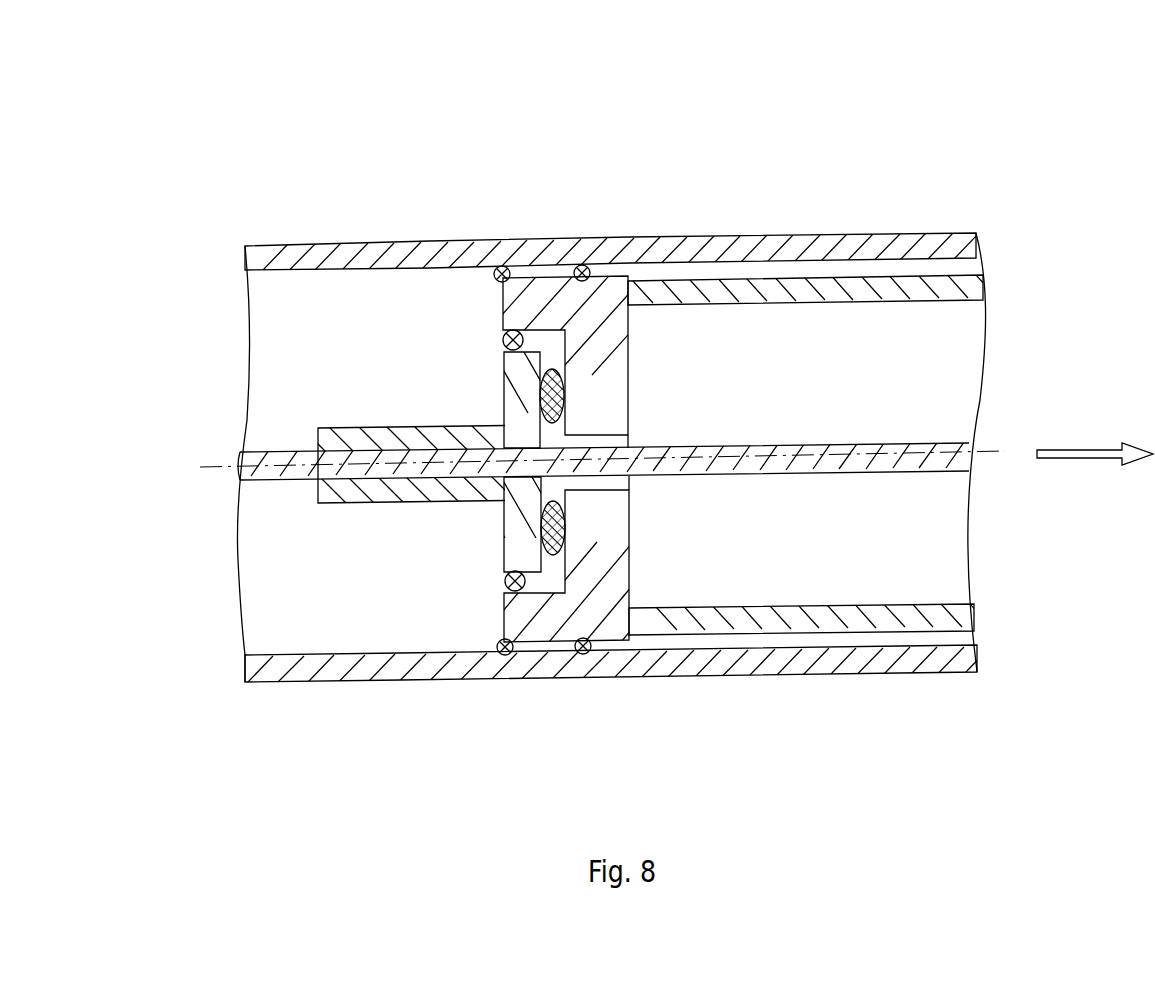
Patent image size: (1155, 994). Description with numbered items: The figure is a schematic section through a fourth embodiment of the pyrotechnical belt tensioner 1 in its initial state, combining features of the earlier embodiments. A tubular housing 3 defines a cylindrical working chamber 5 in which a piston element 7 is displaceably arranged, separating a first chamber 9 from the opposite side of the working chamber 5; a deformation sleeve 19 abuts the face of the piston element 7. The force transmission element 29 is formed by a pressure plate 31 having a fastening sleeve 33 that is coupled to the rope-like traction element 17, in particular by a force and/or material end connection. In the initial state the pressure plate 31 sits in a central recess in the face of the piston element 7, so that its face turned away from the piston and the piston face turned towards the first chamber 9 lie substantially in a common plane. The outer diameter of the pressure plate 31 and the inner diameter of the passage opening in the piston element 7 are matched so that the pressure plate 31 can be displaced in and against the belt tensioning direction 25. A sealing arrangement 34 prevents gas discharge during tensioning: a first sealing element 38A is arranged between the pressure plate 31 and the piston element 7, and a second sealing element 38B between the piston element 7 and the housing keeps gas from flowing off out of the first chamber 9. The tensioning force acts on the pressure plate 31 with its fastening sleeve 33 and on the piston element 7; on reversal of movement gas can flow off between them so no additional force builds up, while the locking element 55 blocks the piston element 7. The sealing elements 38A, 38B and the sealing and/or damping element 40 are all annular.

The belt tensioner 1 is at (1010, 198).
The tubular housing 3 is at (888, 248).
The working chamber 5 is at (285, 345).
The piston element 7 is at (607, 300).
The first chamber 9 is at (285, 300).
The traction element 17 is at (940, 441).
The deformation sleeve 19 is at (795, 283).
The belt tensioning direction 25 is at (1087, 456).
The force transmission element 29 is at (492, 522).
The pressure plate 31 is at (507, 392).
The fastening sleeve 33 is at (341, 427).
The sealing arrangement 34 is at (498, 600).
The first sealing element 38A is at (502, 340).
The second sealing element 38B is at (500, 265).
The sealing and/or damping element 40 is at (552, 368).
The locking element 55 is at (582, 265).